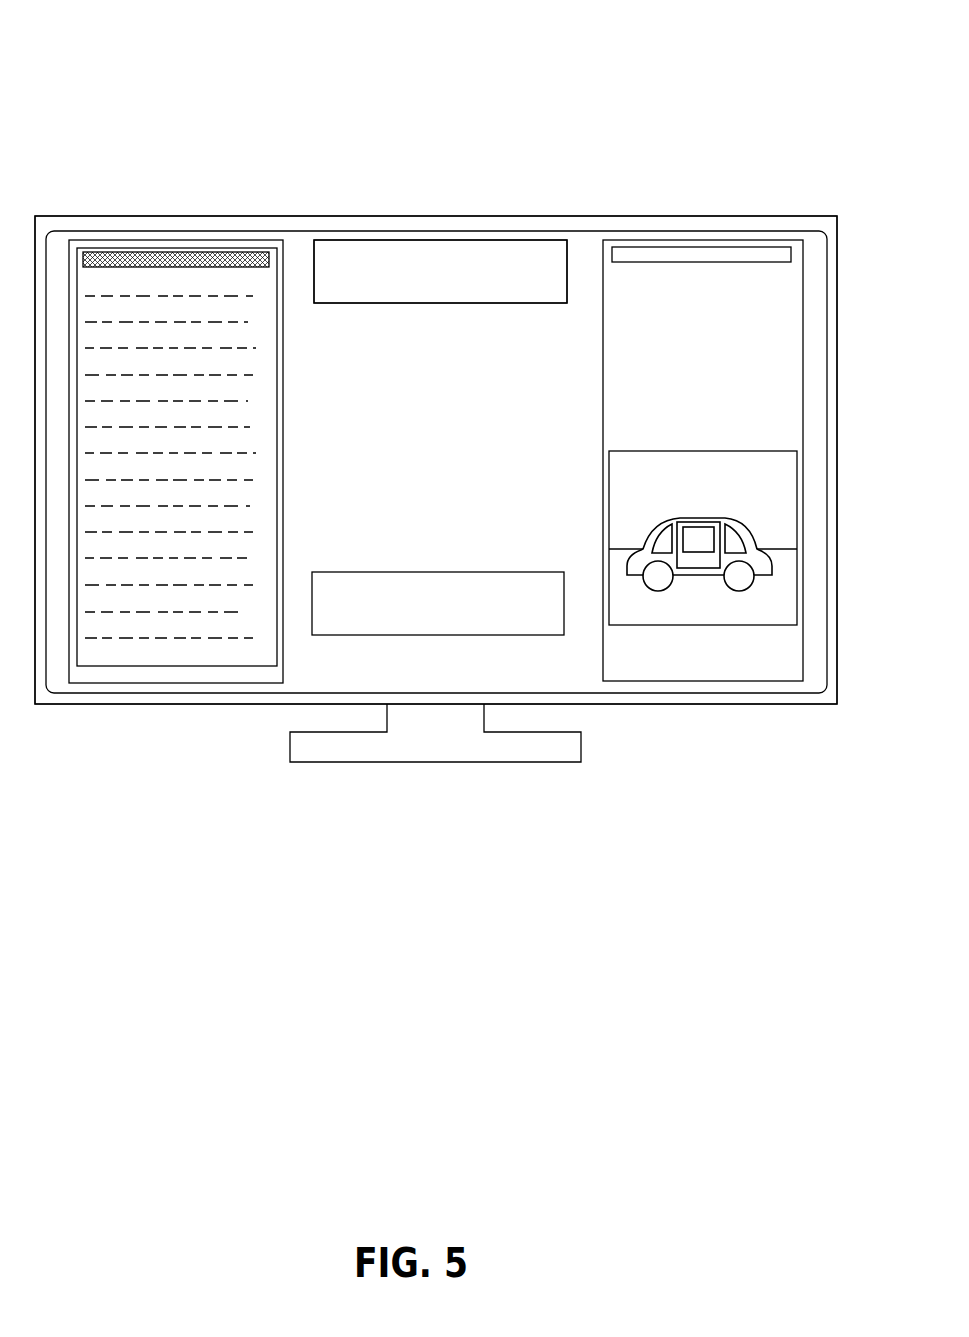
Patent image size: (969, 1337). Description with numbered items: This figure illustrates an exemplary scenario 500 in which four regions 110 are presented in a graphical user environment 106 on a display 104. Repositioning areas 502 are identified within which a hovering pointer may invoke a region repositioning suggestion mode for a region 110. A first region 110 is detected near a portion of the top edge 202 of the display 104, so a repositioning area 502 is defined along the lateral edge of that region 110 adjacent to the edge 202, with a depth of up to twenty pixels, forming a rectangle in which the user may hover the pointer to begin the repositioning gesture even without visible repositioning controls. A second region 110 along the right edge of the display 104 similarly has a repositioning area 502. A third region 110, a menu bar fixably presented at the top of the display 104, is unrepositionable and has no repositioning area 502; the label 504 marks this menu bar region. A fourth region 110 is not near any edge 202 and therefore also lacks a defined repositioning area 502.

The exemplary scenario 500 is at (120, 62).
The display 104 is at (120, 216).
The edge of the display 202 is at (361, 216).
The graphical user environment 106 is at (331, 231).
The region 110 is at (283, 357).
The repositioning area 502 is at (183, 251).
The unrepositionable menu bar region 504 is at (511, 251).